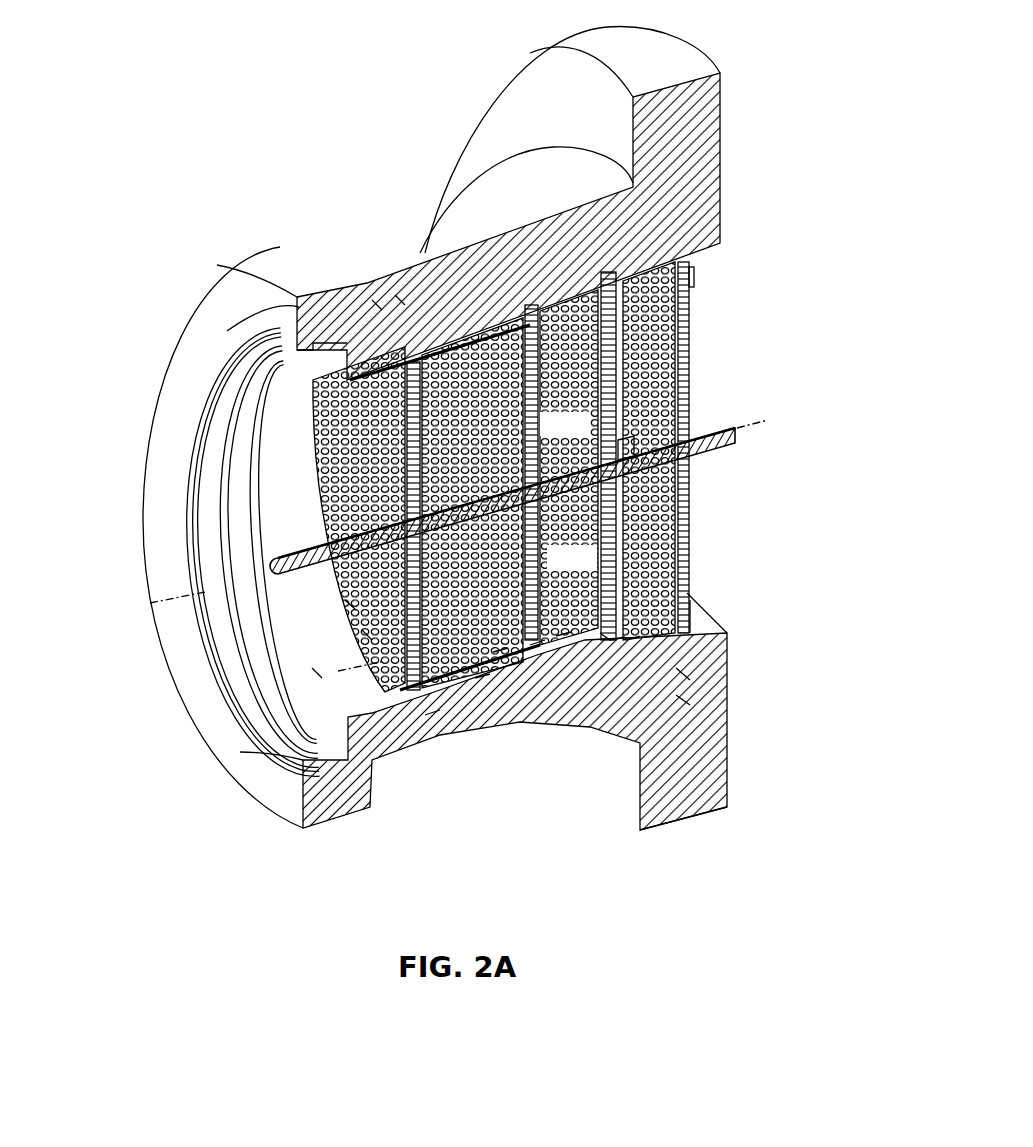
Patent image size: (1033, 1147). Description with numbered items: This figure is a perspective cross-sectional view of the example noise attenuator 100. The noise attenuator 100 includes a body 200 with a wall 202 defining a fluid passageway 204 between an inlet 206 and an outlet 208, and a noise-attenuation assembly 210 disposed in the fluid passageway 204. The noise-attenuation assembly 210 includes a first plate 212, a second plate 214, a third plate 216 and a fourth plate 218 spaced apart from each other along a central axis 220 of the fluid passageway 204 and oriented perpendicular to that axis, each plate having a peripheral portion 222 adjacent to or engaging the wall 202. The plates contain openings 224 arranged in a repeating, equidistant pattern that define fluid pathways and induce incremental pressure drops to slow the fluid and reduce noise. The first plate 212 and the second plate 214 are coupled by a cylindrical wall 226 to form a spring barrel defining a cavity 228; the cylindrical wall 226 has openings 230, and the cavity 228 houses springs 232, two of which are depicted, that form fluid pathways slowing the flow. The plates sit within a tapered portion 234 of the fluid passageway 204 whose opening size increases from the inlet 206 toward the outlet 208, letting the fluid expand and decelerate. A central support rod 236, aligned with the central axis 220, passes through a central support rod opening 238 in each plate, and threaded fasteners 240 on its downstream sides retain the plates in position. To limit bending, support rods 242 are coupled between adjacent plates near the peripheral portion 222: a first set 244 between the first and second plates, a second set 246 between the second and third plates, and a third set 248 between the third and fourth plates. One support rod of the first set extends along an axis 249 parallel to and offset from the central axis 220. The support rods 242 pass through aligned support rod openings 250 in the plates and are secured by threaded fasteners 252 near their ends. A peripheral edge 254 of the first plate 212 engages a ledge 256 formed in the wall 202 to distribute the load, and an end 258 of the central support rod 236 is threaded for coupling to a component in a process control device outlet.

The noise attenuator 100 is at (203, 113).
The body 200 is at (248, 250).
The wall 202 is at (285, 785).
The fluid passageway 204 is at (280, 427).
The inlet 206 is at (340, 700).
The outlet 208 is at (700, 318).
The noise-attenuation assembly 210 is at (700, 567).
The first plate 212 is at (317, 297).
The second plate 214 is at (440, 285).
The third plate 216 is at (537, 320).
The fourth plate 218 is at (683, 307).
The central axis 220 is at (157, 610).
The peripheral portion 222 is at (675, 820).
The openings 224 is at (333, 448).
The cylindrical wall 226 is at (432, 722).
The cavity 228 is at (482, 682).
The openings 230 is at (563, 642).
The springs 232 is at (367, 635).
The tapered portion 234 is at (682, 673).
The central support rod 236 is at (683, 420).
The central support rod opening 238 is at (696, 465).
The threaded fasteners 240 is at (700, 433).
The support rods 242 is at (688, 250).
The first set 244 is at (500, 654).
The second set 246 is at (633, 652).
The third set 248 is at (682, 700).
The axis 249 is at (317, 673).
The support rod openings 250 is at (690, 640).
The threaded fasteners 252 is at (687, 607).
The peripheral edge 254 is at (377, 303).
The ledge 256 is at (400, 297).
The end 258 is at (350, 605).